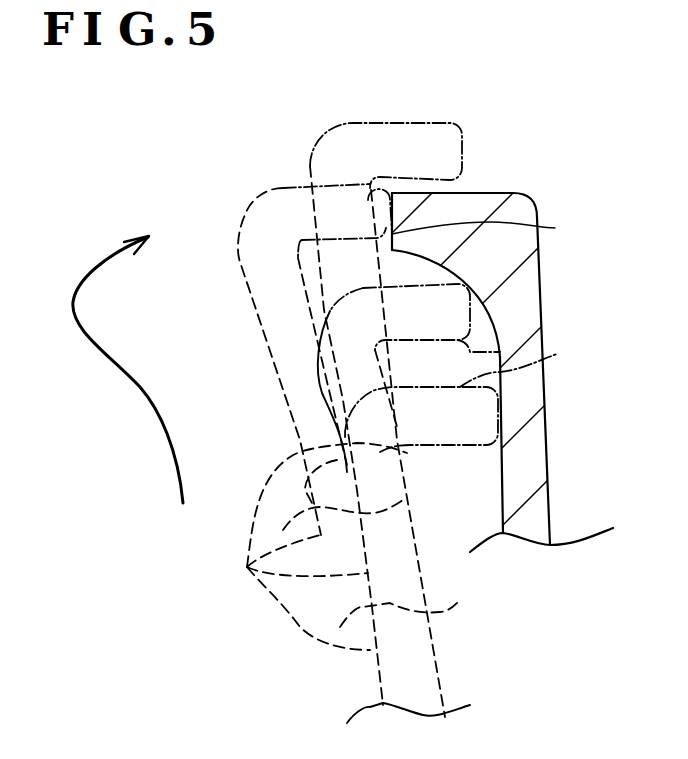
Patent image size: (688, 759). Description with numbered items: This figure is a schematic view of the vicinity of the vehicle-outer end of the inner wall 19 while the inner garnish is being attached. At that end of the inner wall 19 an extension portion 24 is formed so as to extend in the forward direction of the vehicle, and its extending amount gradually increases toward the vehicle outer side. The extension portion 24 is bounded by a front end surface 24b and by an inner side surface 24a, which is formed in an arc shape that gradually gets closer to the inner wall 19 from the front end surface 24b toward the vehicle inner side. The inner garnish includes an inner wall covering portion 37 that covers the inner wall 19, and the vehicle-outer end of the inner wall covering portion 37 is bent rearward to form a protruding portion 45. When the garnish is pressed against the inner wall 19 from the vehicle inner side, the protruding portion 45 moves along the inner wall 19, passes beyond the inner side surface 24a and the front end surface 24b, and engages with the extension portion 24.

The protruding portion 45 is at (463, 139).
The extension portion 24 is at (452, 202).
The inner side surface 24a is at (490, 291).
The front end surface 24b is at (505, 232).
The inner wall 19 is at (525, 459).
The inner wall covering portion 37 is at (253, 573).